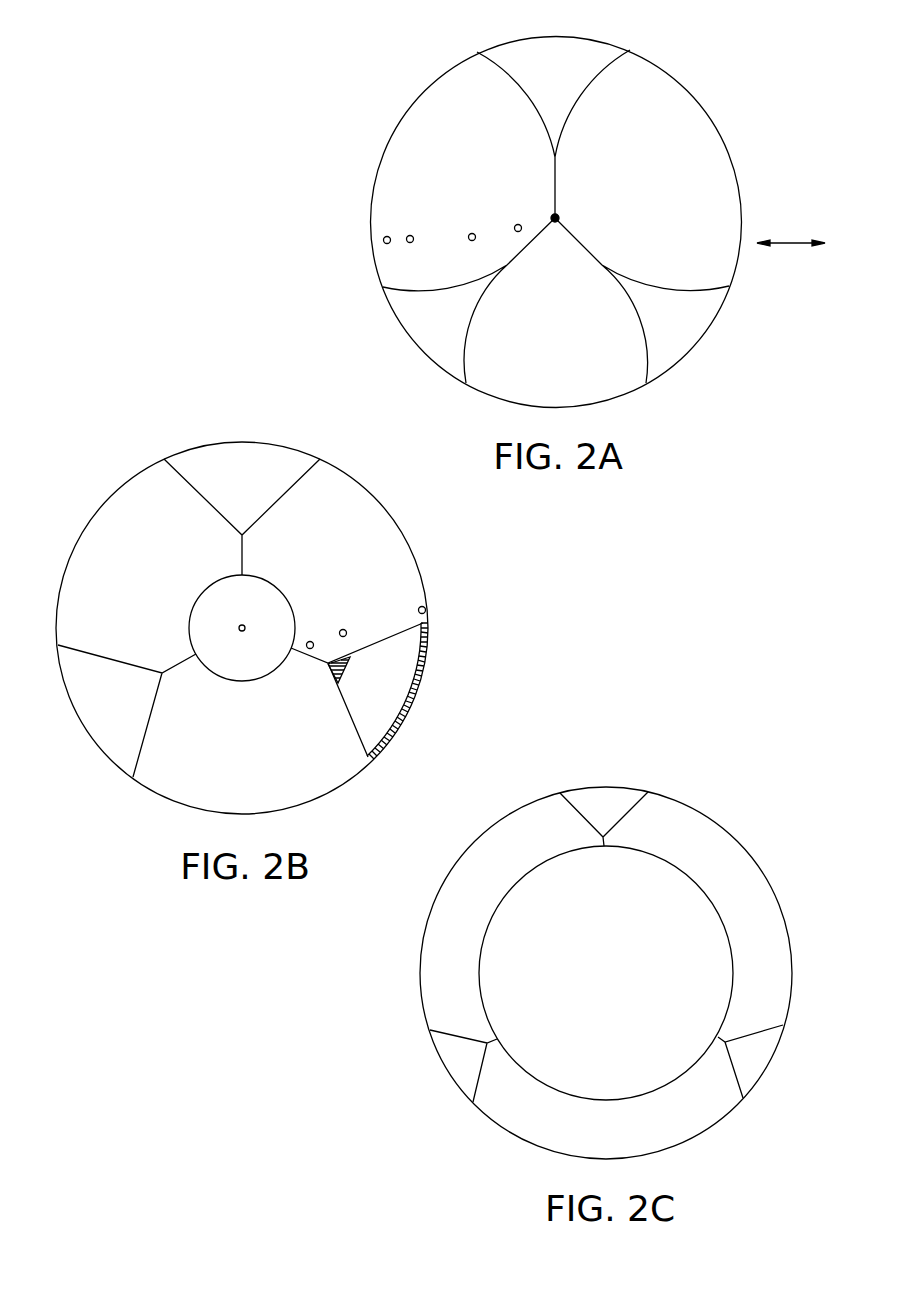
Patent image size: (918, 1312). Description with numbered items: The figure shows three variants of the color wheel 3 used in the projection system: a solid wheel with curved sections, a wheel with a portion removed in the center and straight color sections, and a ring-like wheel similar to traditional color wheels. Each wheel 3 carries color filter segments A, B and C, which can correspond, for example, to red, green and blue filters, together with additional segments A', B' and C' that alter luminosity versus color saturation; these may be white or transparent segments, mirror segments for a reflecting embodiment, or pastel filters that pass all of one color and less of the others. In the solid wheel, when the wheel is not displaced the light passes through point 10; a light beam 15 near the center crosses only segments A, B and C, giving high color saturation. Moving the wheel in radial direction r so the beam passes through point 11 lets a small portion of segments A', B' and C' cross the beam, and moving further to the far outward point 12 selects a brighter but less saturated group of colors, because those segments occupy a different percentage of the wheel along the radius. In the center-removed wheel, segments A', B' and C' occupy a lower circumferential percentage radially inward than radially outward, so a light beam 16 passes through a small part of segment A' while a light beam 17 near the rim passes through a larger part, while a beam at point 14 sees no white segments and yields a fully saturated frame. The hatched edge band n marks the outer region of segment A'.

In FIG. 2A, the color wheel 3 is at (362, 70).
In FIG. 2B, the color wheel 3 is at (94, 439).
In FIG. 2C, the color wheel 3 is at (606, 973).
In FIG. 2A, the point 10 is at (412, 235).
In FIG. 2A, the point 11 is at (472, 233).
In FIG. 2A, the point 12 is at (387, 236).
In FIG. 2A, the light beam 15 is at (517, 224).
In FIG. 2B, the point 14 is at (310, 641).
In FIG. 2B, the light beam 16 is at (342, 629).
In FIG. 2B, the light beam 17 is at (419, 606).
In FIG. 2B, the edge region n is at (408, 688).
In FIG. 2A, the radial direction r is at (793, 241).
In FIG. 2A, the color wheel filter segment A is at (660, 150).
In FIG. 2B, the color wheel filter segment A is at (333, 550).
In FIG. 2C, the color wheel filter segment A is at (727, 880).
In FIG. 2A, the color wheel filter segment B is at (550, 322).
In FIG. 2B, the color wheel filter segment B is at (237, 713).
In FIG. 2C, the color wheel filter segment B is at (607, 1137).
In FIG. 2A, the color wheel filter segment C is at (460, 152).
In FIG. 2B, the color wheel filter segment C is at (148, 563).
In FIG. 2C, the color wheel filter segment C is at (490, 880).
In FIG. 2A, the additional segment A' is at (677, 322).
In FIG. 2B, the additional segment A' is at (373, 687).
In FIG. 2C, the additional segment A' is at (750, 1057).
In FIG. 2A, the additional segment B' is at (430, 322).
In FIG. 2B, the additional segment B' is at (117, 713).
In FIG. 2C, the additional segment B' is at (462, 1058).
In FIG. 2A, the additional segment C' is at (553, 70).
In FIG. 2B, the additional segment C' is at (237, 480).
In FIG. 2C, the additional segment C' is at (602, 805).